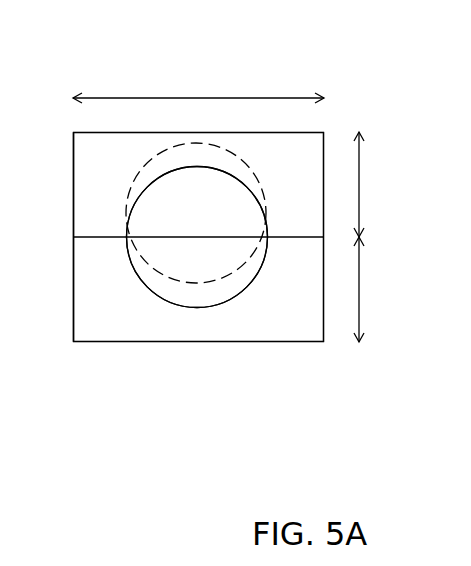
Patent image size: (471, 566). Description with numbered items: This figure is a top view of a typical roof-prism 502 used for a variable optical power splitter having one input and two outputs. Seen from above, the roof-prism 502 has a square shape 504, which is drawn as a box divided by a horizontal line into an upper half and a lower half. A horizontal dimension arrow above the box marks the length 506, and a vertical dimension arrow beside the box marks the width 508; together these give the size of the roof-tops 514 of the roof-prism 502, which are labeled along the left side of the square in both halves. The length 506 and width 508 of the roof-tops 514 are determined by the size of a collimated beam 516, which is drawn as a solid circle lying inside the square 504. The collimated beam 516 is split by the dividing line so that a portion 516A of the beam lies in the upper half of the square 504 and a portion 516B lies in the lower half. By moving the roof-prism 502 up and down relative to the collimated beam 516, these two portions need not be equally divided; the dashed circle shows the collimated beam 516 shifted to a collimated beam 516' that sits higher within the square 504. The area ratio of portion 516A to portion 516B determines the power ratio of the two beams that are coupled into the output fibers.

The roof-prism 502 is at (125, 58).
The square shape 504 is at (233, 342).
The length 506 is at (200, 98).
The width 508 is at (359, 185).
The roof-tops 514 is at (73, 202).
The collimated beam 516 is at (220, 228).
The shifted collimated beam 516' is at (174, 212).
The portion of collimated beam in upper half 516A is at (220, 226).
The portion of collimated beam in lower half 516B is at (220, 265).